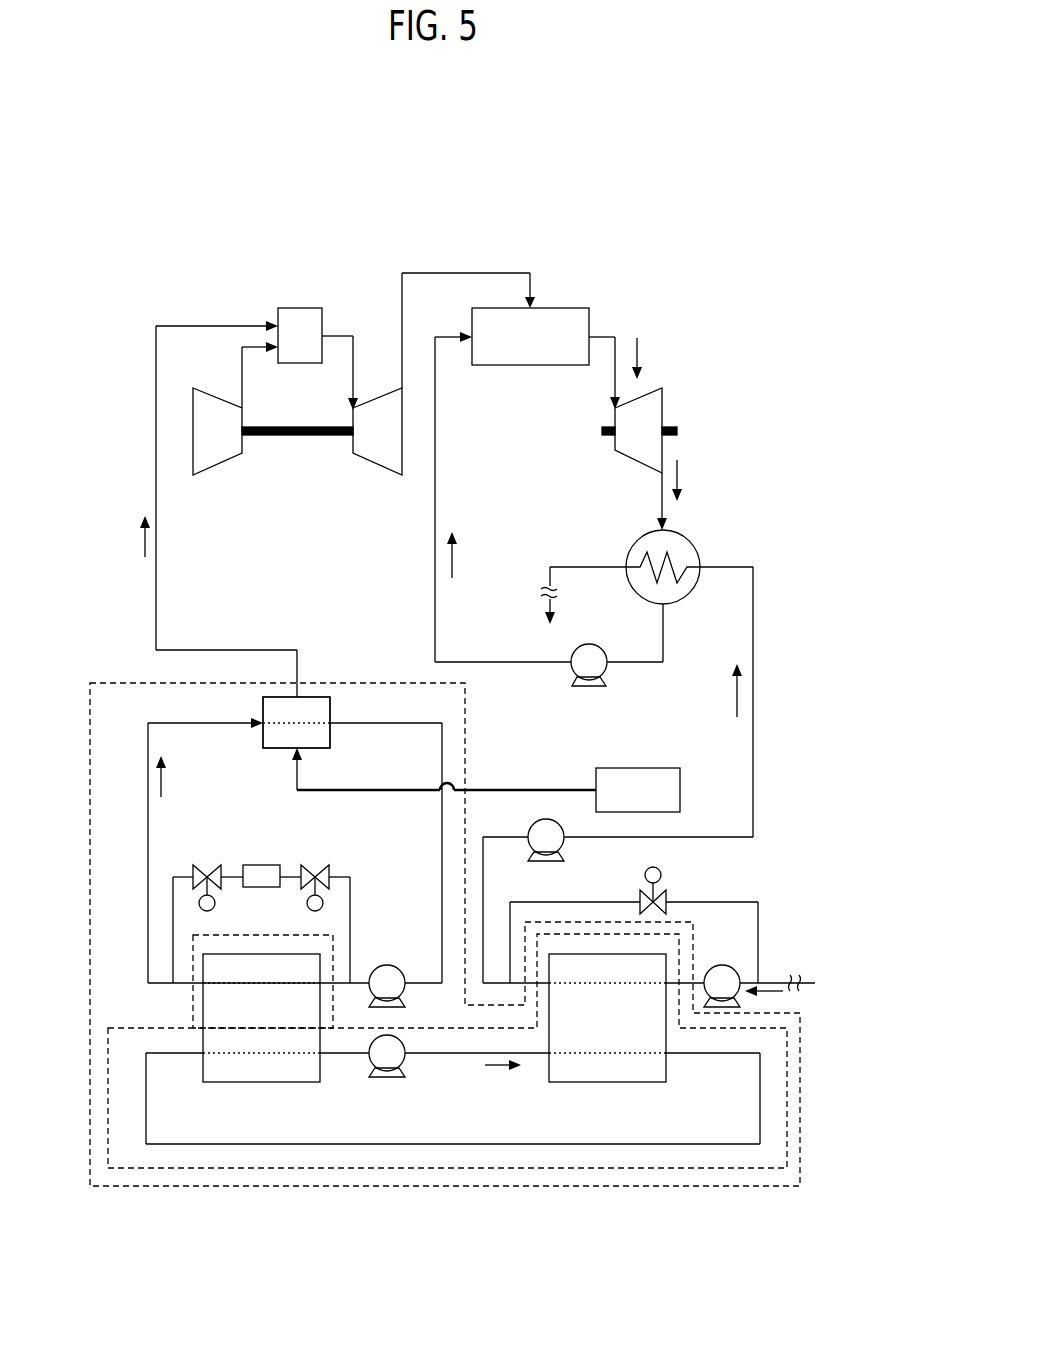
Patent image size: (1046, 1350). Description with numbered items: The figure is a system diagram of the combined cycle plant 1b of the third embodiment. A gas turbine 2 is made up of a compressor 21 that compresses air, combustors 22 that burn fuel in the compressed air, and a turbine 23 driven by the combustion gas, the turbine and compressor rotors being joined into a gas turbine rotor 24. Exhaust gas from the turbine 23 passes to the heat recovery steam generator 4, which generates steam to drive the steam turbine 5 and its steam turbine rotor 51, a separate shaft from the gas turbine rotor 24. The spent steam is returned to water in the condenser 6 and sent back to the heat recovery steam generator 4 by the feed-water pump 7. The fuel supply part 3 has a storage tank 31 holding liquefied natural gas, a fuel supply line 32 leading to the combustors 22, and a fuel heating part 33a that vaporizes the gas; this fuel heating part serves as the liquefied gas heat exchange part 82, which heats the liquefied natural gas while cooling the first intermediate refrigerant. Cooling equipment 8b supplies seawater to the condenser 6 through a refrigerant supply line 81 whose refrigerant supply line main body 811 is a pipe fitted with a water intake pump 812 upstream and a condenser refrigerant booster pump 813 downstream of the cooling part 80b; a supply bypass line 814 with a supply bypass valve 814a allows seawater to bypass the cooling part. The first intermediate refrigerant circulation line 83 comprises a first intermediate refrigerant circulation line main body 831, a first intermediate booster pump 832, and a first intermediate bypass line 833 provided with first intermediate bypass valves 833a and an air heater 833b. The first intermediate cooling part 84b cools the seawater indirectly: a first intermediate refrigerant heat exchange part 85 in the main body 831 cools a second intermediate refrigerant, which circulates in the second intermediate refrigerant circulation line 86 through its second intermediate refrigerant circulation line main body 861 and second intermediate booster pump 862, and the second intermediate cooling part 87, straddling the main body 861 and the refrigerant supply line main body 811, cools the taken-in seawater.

The combined cycle plant 1b is at (683, 232).
The gas turbine 2 is at (343, 283).
The combustor 22 is at (295, 312).
The compressor 21 is at (222, 460).
The turbine 23 is at (379, 460).
The gas turbine rotor 24 is at (297, 437).
The heat recovery steam generator 4 is at (566, 318).
The steam turbine 5 is at (660, 400).
The steam turbine rotor 51 is at (603, 441).
The condenser 6 is at (680, 538).
The feed-water pump 7 is at (601, 668).
The fuel supply line 32 is at (157, 600).
The fuel heating part 33a is at (312, 705).
The liquefied gas heat exchange part 82 is at (296, 722).
The fuel supply part 3 is at (556, 780).
The storage tank 31 is at (640, 778).
The refrigerant supply line 81 is at (765, 718).
The refrigerant supply line main body 811 is at (755, 775).
The condenser refrigerant booster pump 813 is at (564, 845).
The supply bypass line 814 is at (707, 900).
The supply bypass valve 814a is at (665, 898).
The water intake pump 812 is at (722, 964).
The first intermediate refrigerant circulation line 83 is at (442, 820).
The first intermediate refrigerant circulation line main body 831 is at (442, 851).
The first intermediate bypass line 833 is at (350, 900).
The first intermediate bypass valve 833a is at (200, 863).
The air heater 833b is at (264, 866).
The first intermediate booster pump 832 is at (386, 965).
The first intermediate refrigerant heat exchange part 85 is at (193, 1008).
The cooling equipment 8b is at (619, 1218).
The first intermediate cooling part 84b is at (438, 1172).
The cooling part 80b is at (487, 1190).
The second intermediate refrigerant circulation line 86 is at (725, 1146).
The second intermediate refrigerant circulation line main body 861 is at (718, 1056).
The second intermediate booster pump 862 is at (407, 1064).
The second intermediate cooling part 87 is at (595, 1073).